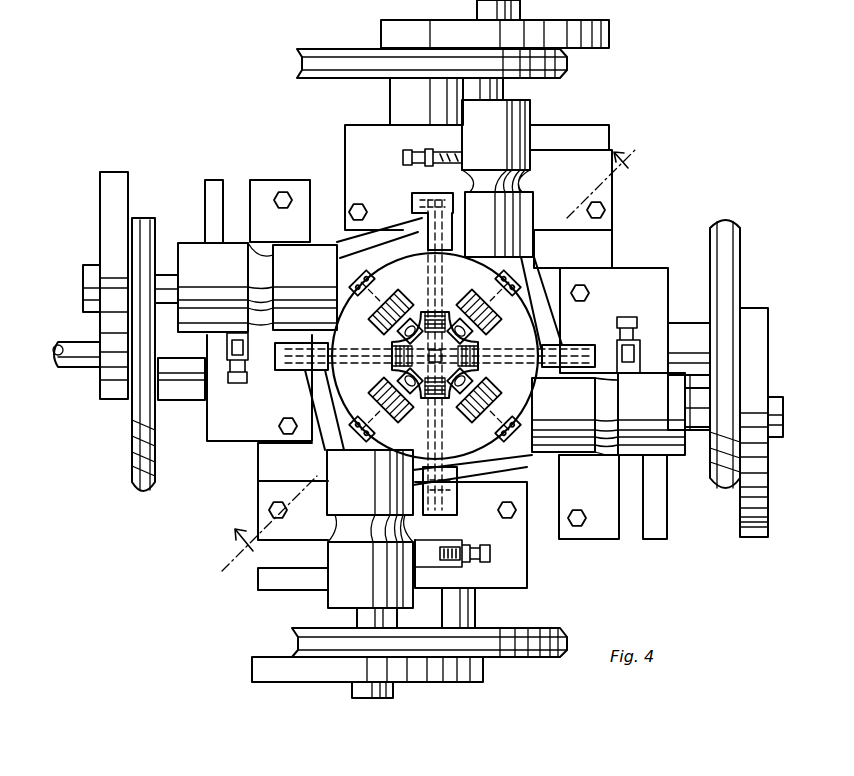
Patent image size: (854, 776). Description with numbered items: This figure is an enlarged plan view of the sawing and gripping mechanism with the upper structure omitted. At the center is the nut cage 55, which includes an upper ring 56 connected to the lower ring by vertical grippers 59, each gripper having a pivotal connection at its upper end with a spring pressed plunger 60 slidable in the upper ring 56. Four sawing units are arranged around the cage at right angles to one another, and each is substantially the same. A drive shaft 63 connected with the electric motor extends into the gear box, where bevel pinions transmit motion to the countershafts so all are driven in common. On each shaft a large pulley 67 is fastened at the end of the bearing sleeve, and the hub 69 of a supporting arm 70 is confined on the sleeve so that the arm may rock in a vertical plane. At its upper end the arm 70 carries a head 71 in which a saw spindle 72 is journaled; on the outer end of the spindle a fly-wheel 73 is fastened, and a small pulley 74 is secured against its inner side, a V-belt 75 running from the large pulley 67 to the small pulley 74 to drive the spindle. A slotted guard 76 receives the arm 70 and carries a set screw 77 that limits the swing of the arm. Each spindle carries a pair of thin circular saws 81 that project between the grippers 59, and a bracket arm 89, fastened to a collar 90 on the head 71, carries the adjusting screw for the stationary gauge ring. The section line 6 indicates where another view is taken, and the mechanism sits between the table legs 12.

The section line 6- 6 is at (431, 359).
The legs 12 is at (505, 90).
The nut cage 55 is at (422, 392).
The upper ring 56 is at (535, 402).
The grippers 59 is at (412, 310).
The spring pressed plunger 60 is at (472, 306).
The drive shaft 63 is at (72, 372).
The large pulley 67 is at (336, 75).
The hub 69 is at (176, 392).
The supporting arm 70 is at (227, 338).
The head 71 is at (528, 137).
The saw spindle 72 is at (695, 430).
The fly-wheel 73 is at (610, 33).
The small pulley 74 is at (553, 80).
The V-belt 75 is at (345, 62).
The slotted guard 76 is at (345, 143).
The set screw 77 is at (403, 160).
The circular saw 81 is at (478, 342).
The bracket arm 89 is at (394, 225).
The collar 90 is at (300, 252).